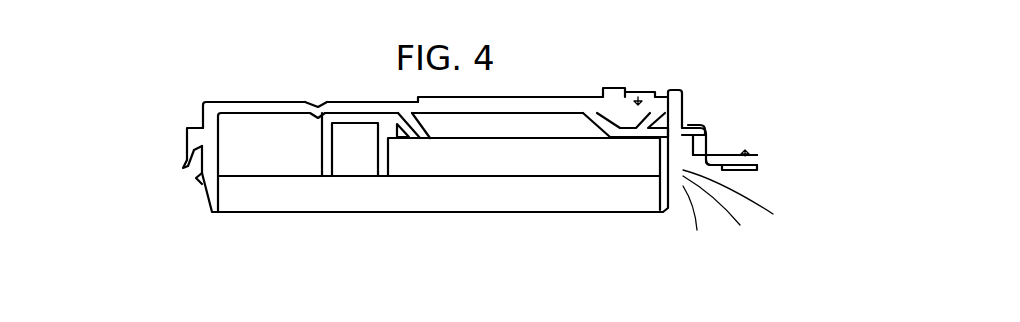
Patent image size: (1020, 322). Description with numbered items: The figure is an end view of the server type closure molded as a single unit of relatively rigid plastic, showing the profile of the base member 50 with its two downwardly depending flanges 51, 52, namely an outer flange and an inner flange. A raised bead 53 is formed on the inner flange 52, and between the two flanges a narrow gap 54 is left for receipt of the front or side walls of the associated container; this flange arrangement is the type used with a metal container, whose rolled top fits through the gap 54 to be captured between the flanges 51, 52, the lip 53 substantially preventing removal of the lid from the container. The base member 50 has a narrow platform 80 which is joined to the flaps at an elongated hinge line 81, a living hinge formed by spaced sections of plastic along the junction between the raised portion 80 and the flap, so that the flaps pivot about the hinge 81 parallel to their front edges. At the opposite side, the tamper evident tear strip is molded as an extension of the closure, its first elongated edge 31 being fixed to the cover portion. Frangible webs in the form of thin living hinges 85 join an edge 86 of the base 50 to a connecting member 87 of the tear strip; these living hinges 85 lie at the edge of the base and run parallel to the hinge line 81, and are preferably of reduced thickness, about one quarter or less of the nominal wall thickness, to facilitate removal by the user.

The first elongated edge 31 is at (790, 115).
The base member 50 is at (202, 110).
The outer flange 51 is at (187, 150).
The inner flange 52 is at (195, 190).
The raised bead 53 is at (190, 175).
The narrow gap 54 is at (190, 173).
The narrow platform 80 is at (262, 101).
The hinge line 81 is at (320, 104).
The living hinges 85 is at (707, 135).
The edge 86 is at (684, 123).
The connecting member 87 is at (697, 122).